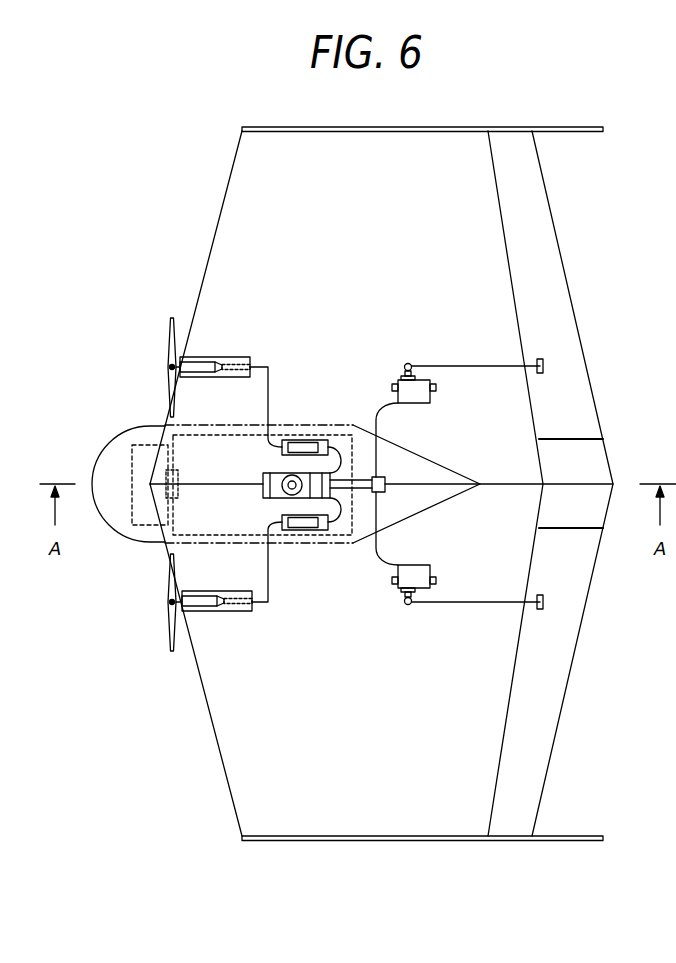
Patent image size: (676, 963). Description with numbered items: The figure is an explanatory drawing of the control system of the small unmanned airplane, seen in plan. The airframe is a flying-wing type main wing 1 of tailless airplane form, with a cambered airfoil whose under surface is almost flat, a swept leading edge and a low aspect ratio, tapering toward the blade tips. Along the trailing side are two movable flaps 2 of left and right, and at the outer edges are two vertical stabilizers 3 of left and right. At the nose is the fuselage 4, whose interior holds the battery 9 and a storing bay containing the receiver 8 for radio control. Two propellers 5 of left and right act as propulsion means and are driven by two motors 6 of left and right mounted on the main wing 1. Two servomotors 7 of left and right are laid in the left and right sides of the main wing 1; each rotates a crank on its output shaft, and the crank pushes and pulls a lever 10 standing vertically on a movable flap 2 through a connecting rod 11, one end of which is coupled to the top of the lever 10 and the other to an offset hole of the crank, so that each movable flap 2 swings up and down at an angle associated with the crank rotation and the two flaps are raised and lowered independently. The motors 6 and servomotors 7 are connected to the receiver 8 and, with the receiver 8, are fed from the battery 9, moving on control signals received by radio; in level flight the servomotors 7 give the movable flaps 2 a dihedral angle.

The main wing 1 is at (247, 232).
The movable flap 2 is at (555, 227).
The vertical stabilizer 3 is at (578, 127).
The fuselage 4 is at (118, 529).
The propeller 5 is at (168, 334).
The motor 6 is at (205, 358).
The servomotor 7 is at (430, 395).
The receiver 8 is at (263, 476).
The battery 9 is at (136, 445).
The lever 10 is at (545, 366).
The connecting rod 11 is at (468, 365).